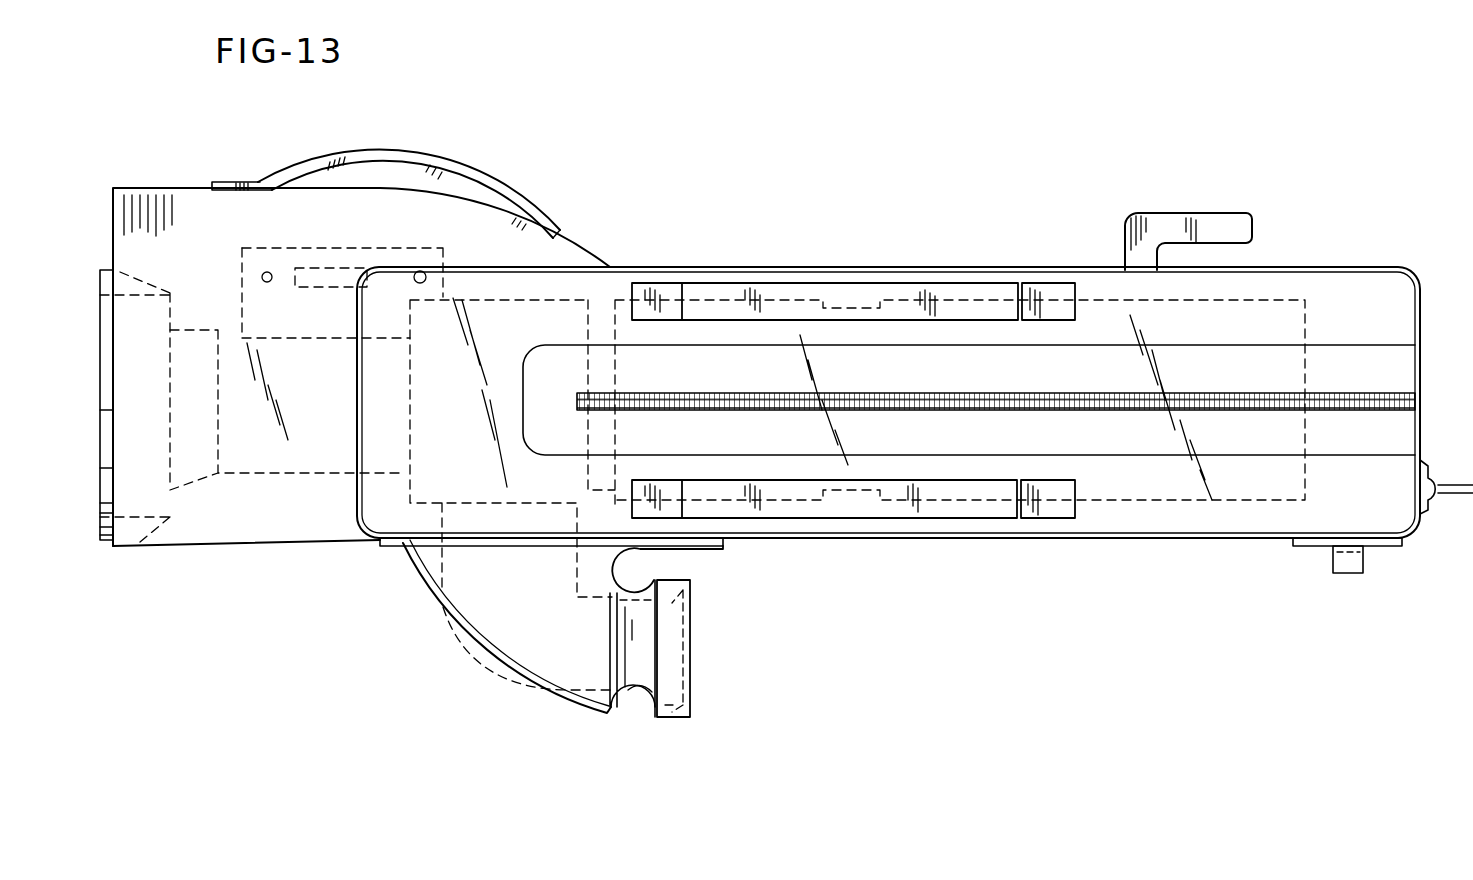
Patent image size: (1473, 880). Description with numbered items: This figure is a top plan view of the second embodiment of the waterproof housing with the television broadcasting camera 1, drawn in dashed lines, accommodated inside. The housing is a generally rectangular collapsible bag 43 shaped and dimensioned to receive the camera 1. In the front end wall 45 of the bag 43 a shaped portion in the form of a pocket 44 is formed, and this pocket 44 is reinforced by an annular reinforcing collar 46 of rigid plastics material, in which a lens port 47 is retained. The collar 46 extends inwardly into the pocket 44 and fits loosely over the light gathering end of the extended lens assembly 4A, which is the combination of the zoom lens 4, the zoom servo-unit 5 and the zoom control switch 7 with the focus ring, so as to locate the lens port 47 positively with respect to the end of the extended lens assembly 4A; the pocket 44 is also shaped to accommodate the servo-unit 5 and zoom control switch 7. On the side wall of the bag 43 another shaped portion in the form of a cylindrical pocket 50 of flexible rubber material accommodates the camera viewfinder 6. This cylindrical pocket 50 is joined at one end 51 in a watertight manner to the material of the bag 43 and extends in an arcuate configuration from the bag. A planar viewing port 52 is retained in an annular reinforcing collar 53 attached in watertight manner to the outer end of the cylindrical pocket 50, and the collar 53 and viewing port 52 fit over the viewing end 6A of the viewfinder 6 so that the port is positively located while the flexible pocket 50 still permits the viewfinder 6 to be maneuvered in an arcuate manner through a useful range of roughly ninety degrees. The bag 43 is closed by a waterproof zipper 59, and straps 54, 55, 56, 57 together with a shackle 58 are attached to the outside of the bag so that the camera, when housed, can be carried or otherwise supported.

The television broadcasting camera 1 is at (700, 294).
The zoom lens 4 is at (301, 472).
The extended lens assembly 4A is at (232, 330).
The zoom servo-unit 5 is at (368, 247).
The viewfinder 6 is at (478, 660).
The viewing end of the camera viewfinder 6A is at (685, 645).
The zoom control switch 7 is at (300, 270).
The collapsible bag 43 is at (988, 268).
The pocket 44 is at (218, 548).
The front end wall 45 is at (357, 384).
The annular reinforcing collar 46 is at (113, 548).
The lens port 47 is at (105, 363).
The cylindrical pocket 50 is at (438, 623).
The end of the cylindrical pocket 51 is at (393, 548).
The viewing port 52 is at (690, 677).
The annular reinforcing collar 53 is at (680, 607).
The strap 54 is at (860, 283).
The strap 55 is at (947, 512).
The strap 56 is at (447, 172).
The strap 57 is at (1333, 560).
The shackle 58 is at (1440, 485).
The waterproof zipper 59 is at (1200, 398).